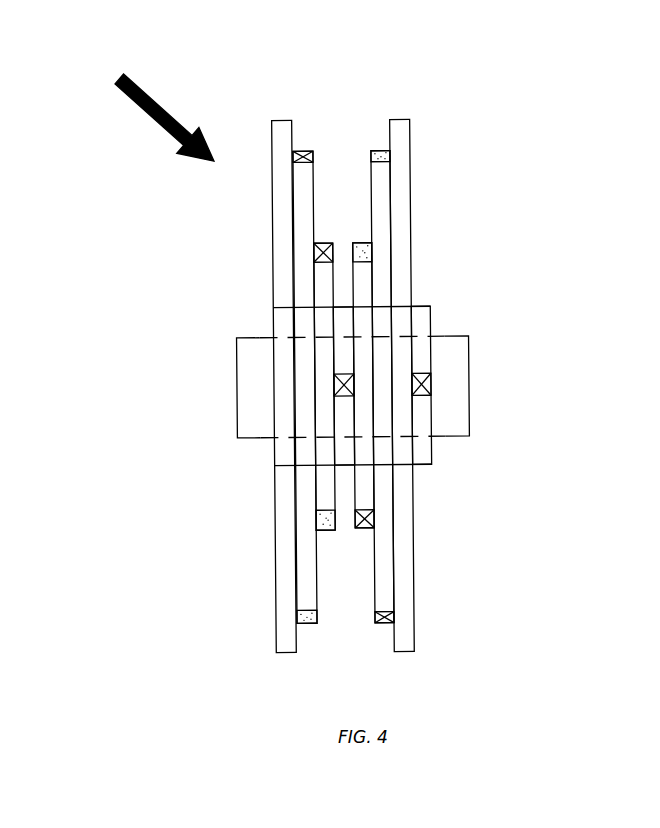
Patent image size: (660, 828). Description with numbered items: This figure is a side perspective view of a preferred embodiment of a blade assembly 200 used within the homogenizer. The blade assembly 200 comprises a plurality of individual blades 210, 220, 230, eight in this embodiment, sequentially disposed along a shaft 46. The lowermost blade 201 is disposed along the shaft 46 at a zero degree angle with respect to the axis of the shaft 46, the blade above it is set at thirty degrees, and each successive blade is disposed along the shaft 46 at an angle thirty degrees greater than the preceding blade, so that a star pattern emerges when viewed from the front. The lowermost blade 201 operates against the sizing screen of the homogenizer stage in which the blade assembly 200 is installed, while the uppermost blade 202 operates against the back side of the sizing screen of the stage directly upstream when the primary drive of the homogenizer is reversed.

The blade assembly 200 is at (146, 107).
The lowermost blade 201 is at (275, 284).
The uppermost blade 202 is at (423, 303).
The individual blade 210 is at (401, 120).
The individual blade 220 is at (388, 150).
The individual blade 230 is at (367, 243).
The shaft 46 is at (237, 413).